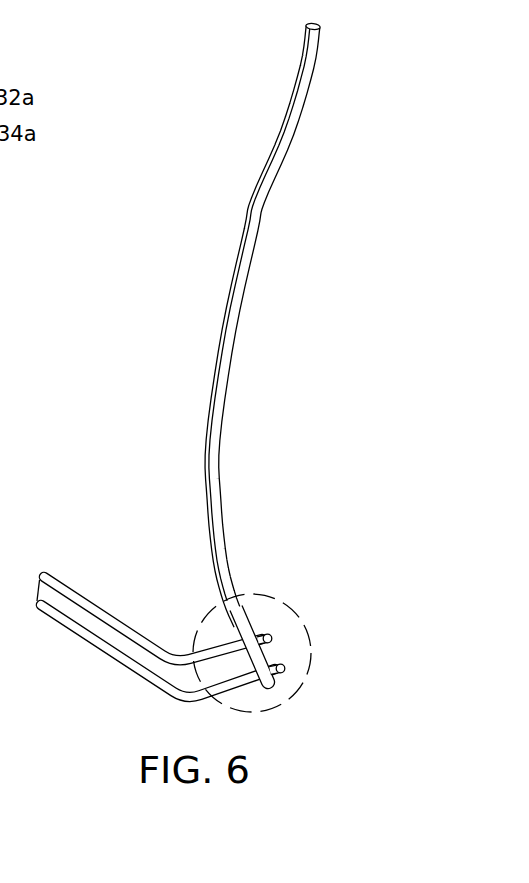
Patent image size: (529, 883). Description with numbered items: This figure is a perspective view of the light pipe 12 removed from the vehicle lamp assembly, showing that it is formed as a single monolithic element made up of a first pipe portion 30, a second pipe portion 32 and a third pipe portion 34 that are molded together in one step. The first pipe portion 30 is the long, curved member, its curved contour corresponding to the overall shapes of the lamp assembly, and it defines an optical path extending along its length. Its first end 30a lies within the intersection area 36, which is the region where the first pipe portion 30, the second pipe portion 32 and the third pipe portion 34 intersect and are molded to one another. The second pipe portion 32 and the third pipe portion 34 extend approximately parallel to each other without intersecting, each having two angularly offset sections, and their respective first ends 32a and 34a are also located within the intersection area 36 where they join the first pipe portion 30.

The light pipe 12 is at (205, 384).
The first pipe portion 30 is at (231, 318).
The first end of the first pipe portion 30a is at (273, 689).
The second pipe portion 32 is at (102, 610).
The first end of the second pipe portion 32a is at (272, 637).
The third pipe portion 34 is at (114, 660).
The first end of the third pipe portion 34a is at (284, 666).
The intersection area 36 is at (292, 596).